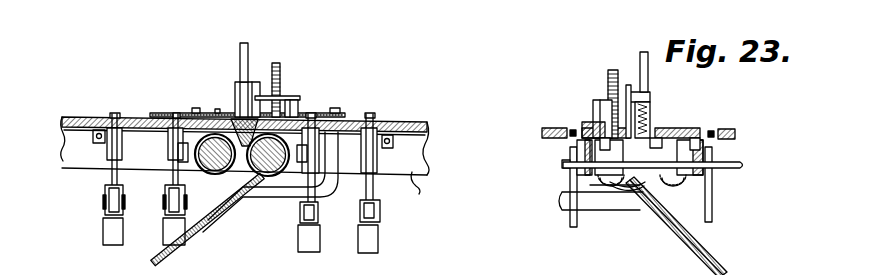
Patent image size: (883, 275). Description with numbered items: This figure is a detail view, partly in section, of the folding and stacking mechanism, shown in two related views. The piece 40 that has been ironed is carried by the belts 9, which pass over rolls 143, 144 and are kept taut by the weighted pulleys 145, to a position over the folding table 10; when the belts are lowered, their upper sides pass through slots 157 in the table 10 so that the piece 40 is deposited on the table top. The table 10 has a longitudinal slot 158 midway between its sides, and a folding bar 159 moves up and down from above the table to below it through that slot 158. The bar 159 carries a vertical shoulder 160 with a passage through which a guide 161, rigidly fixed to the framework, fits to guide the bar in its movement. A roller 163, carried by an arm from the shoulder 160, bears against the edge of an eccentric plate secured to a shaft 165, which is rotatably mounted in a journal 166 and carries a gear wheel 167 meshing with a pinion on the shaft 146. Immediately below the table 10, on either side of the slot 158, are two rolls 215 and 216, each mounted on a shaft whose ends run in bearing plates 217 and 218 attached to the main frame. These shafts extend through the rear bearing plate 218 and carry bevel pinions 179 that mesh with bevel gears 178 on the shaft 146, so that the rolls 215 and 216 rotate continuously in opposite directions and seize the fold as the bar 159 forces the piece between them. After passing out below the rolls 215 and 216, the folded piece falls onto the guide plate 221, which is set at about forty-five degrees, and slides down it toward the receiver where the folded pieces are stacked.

The belts 9 is at (171, 176).
The folding table 10 is at (364, 119).
The piece 40 is at (199, 114).
The rolls 143 is at (118, 117).
The rolls 144 is at (170, 160).
The weighted pulleys 145 is at (166, 238).
The shaft 146 is at (727, 163).
The slots 157 is at (117, 117).
The longitudinal slot 158 is at (655, 128).
The folding bar 159 is at (237, 96).
The shoulder 160 is at (238, 84).
The guide 161 is at (238, 47).
The roller 163 is at (254, 82).
The shaft 165 is at (283, 97).
The journal 166 is at (298, 105).
The gear wheel 167 is at (281, 72).
The bevel gears 178 is at (688, 128).
The bevel pinions 179 is at (640, 210).
The roll 215 is at (229, 172).
The roll 216 is at (276, 178).
The bearing plate 217 is at (648, 180).
The rear bearing plate 218 is at (412, 172).
The guide plate 221 is at (203, 238).